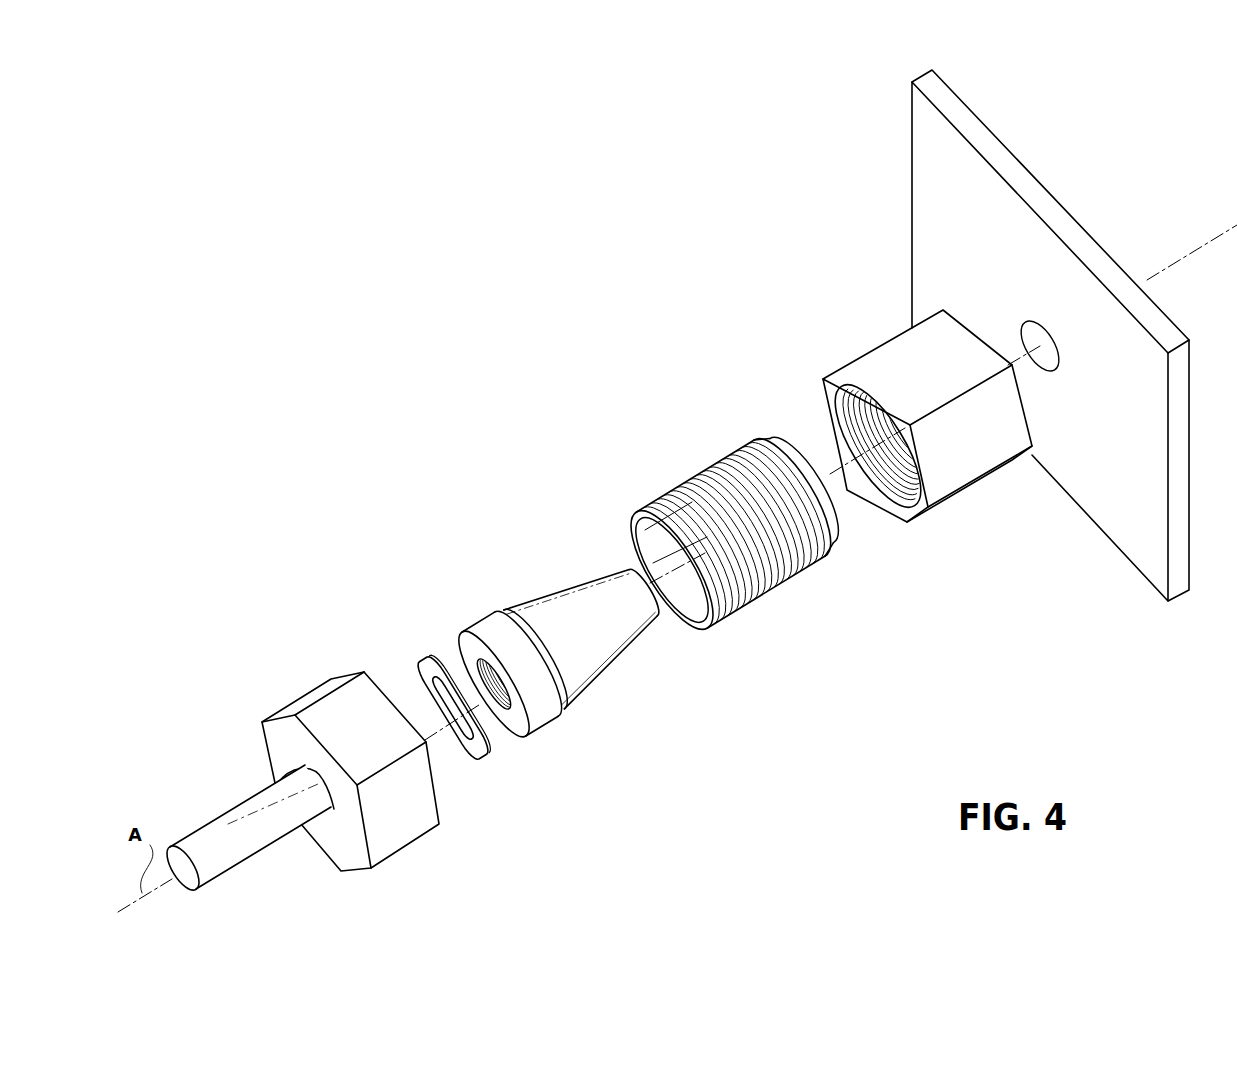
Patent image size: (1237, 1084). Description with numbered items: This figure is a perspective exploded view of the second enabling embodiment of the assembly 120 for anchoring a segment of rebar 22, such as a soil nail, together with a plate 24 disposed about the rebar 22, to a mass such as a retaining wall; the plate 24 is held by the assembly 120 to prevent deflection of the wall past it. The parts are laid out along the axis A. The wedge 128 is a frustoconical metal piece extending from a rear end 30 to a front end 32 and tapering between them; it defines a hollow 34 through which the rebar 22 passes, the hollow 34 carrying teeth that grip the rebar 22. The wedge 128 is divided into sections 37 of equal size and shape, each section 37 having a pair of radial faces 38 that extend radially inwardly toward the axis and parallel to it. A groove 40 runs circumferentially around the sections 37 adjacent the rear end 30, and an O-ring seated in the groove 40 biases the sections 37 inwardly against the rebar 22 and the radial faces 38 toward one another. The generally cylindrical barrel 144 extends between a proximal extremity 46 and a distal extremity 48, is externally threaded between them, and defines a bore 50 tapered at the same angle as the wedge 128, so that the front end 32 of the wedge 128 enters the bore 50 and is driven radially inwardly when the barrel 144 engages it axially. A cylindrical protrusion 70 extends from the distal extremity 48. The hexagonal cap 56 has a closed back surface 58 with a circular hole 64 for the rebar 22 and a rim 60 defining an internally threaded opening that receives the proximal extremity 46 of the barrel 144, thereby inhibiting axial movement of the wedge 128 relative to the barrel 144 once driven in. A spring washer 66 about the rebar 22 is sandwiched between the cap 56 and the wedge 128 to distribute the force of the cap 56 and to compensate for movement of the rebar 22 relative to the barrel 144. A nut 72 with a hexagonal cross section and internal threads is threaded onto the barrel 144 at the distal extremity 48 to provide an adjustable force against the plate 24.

The segment of rebar 22 is at (235, 858).
The plate 24 is at (915, 256).
The rear end 30 is at (520, 724).
The front end 32 is at (668, 620).
The hollow 34 is at (462, 668).
The sections 37 is at (584, 595).
The radial faces 38 is at (579, 690).
The groove 40 is at (558, 722).
The proximal extremity 46 is at (640, 512).
The distal extremity 48 is at (767, 438).
The bore 50 is at (692, 605).
The cap 56 is at (332, 738).
The back surface 58 is at (272, 738).
The rim 60 is at (458, 798).
The hole 64 is at (276, 785).
The spring washer 66 is at (480, 762).
The protrusion 70 is at (838, 522).
The nut 72 is at (960, 505).
The assembly 120 is at (1013, 335).
The wedge 128 is at (555, 655).
The barrel 144 is at (728, 521).